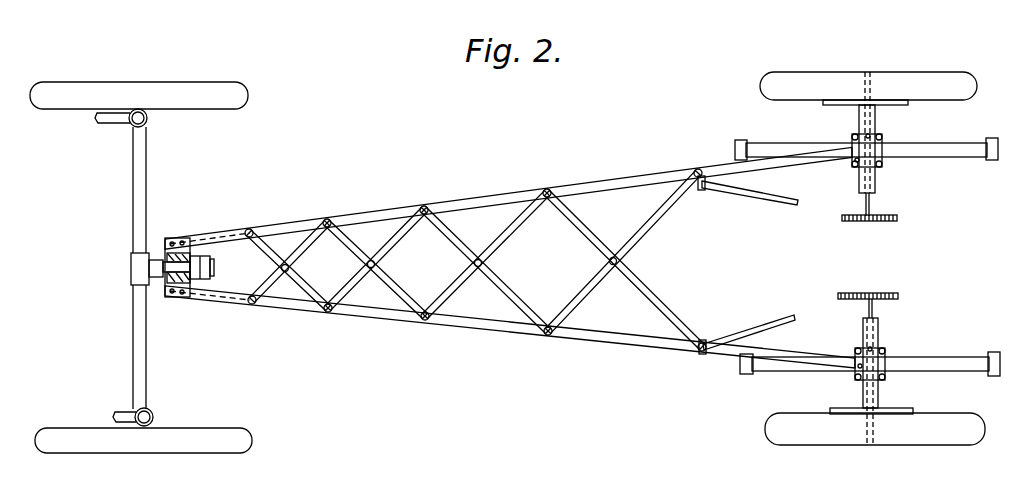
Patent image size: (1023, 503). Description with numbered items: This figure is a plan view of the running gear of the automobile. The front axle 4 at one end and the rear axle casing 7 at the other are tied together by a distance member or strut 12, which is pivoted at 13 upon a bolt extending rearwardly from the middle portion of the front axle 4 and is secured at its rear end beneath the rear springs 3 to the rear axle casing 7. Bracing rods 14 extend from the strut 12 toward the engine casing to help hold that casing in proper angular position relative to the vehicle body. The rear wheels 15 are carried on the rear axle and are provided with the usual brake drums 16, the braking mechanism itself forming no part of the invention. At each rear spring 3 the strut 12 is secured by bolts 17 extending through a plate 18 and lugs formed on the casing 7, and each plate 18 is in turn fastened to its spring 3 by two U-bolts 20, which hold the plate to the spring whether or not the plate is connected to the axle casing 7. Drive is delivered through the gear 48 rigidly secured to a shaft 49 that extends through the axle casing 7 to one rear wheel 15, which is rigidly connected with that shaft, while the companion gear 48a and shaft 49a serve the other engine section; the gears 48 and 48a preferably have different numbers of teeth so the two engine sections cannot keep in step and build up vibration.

The spring 3 is at (922, 147).
The front axle 4 is at (146, 358).
The rear axle casing 7 is at (876, 187).
The strut 12 is at (472, 201).
The pivot 13 is at (181, 256).
The bracing rod 14 is at (742, 194).
The rear wheel 15 is at (762, 87).
The brake drum 16 is at (826, 104).
The bolt 17 is at (883, 137).
The plate 18 is at (871, 138).
The U-bolt 20 is at (857, 164).
The gear 48 is at (838, 295).
The gear 48a is at (895, 219).
The shaft 49 is at (868, 311).
The shaft 49a is at (865, 201).